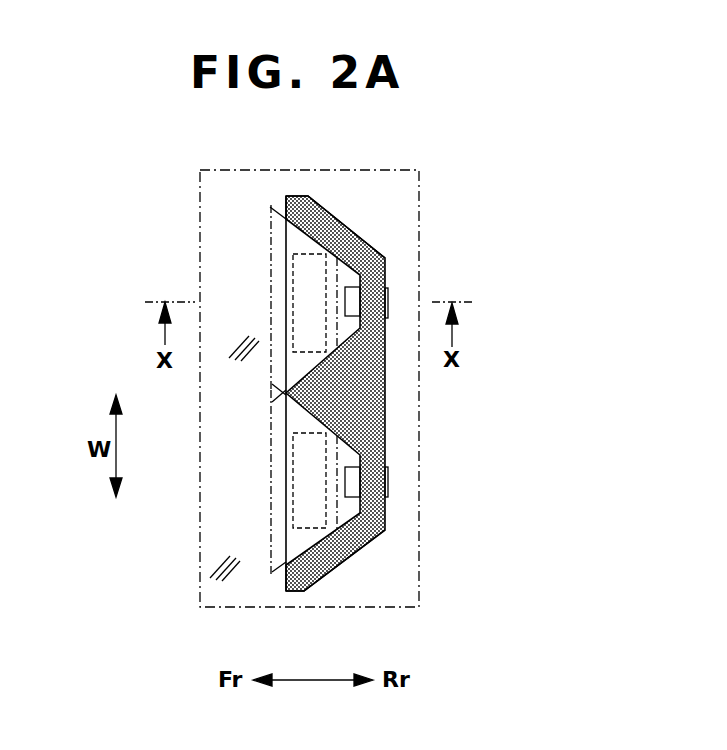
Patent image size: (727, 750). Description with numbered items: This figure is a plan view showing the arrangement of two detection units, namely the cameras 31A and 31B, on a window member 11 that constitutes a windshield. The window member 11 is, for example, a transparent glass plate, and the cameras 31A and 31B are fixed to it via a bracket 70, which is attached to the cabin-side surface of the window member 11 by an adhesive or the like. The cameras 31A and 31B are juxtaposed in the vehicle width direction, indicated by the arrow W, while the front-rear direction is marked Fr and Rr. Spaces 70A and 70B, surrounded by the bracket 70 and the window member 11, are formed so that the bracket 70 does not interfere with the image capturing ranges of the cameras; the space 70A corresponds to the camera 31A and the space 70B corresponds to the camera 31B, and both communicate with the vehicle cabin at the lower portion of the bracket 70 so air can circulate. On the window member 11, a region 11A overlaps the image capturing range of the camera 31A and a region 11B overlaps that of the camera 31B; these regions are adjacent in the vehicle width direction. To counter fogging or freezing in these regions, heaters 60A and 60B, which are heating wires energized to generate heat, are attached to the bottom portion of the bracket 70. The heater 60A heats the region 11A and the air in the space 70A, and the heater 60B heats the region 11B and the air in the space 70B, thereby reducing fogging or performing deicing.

The window member 11 is at (200, 231).
The region 11A is at (271, 575).
The region 11B is at (272, 205).
The bracket 70 is at (387, 410).
The space 70A is at (343, 513).
The space 70B is at (310, 240).
The camera 31A is at (388, 493).
The camera 31B is at (387, 292).
The heater 60A is at (293, 480).
The heater 60B is at (292, 355).